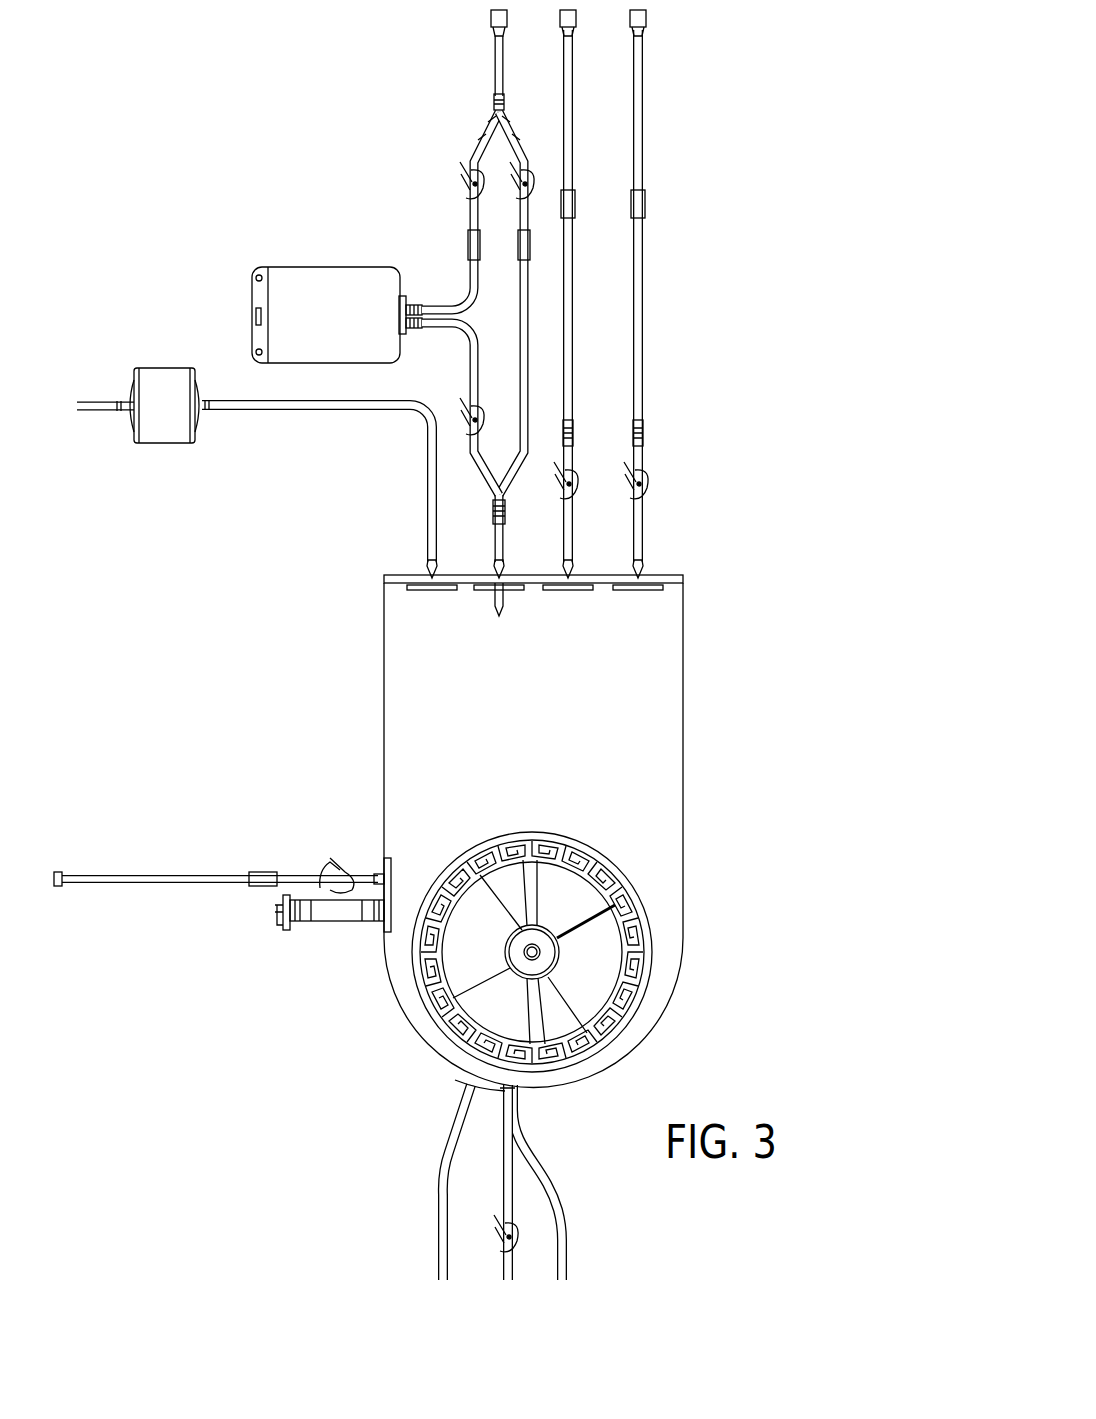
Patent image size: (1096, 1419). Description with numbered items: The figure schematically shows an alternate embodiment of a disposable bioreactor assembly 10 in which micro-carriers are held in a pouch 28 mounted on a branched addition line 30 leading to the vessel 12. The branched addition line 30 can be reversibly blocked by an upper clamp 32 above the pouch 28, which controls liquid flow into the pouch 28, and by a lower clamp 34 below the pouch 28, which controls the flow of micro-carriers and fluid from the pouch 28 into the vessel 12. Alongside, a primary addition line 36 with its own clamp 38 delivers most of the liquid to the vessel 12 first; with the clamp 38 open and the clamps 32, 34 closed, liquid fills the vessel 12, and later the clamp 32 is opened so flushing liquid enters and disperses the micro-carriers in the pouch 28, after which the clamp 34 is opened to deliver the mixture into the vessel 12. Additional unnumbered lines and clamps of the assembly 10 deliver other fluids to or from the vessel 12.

The disposable bioreactor assembly 10 is at (425, 645).
The vessel 12 is at (683, 738).
The pouch 28 is at (312, 267).
The branched addition line 30 is at (466, 283).
The clamp 32 is at (462, 192).
The clamp 34 is at (458, 417).
The primary addition line 36 is at (530, 327).
The clamp 38 is at (512, 172).